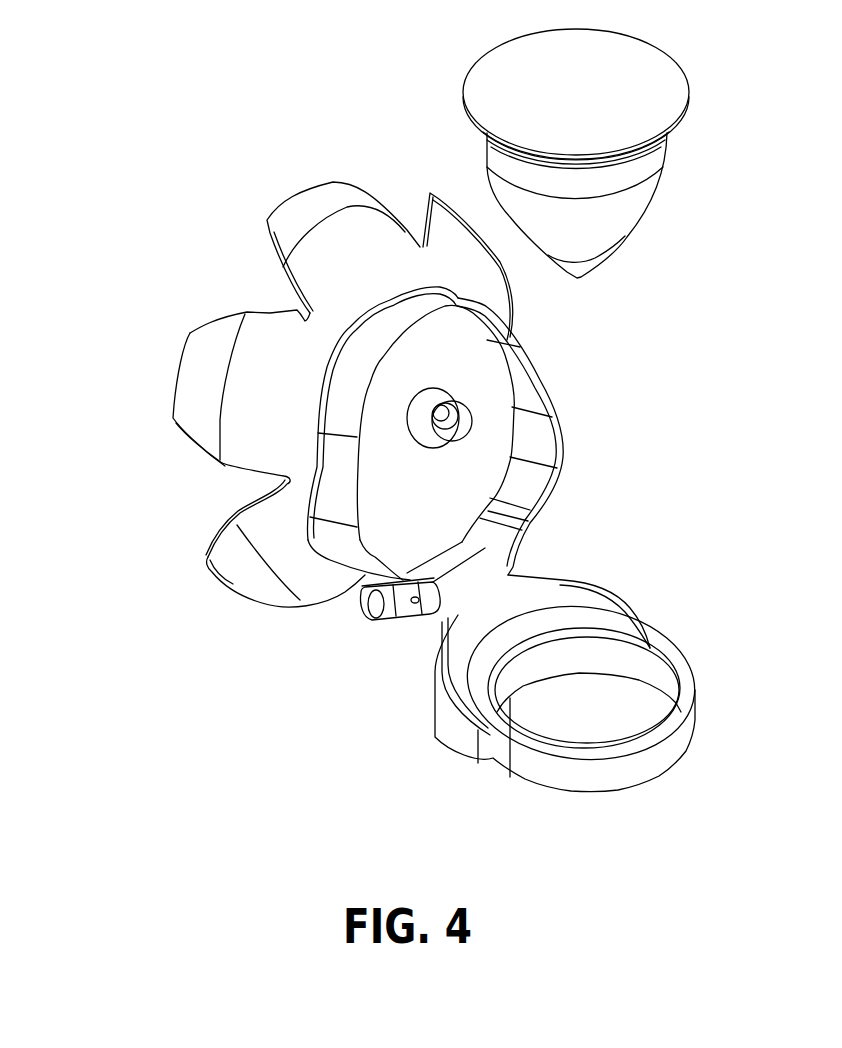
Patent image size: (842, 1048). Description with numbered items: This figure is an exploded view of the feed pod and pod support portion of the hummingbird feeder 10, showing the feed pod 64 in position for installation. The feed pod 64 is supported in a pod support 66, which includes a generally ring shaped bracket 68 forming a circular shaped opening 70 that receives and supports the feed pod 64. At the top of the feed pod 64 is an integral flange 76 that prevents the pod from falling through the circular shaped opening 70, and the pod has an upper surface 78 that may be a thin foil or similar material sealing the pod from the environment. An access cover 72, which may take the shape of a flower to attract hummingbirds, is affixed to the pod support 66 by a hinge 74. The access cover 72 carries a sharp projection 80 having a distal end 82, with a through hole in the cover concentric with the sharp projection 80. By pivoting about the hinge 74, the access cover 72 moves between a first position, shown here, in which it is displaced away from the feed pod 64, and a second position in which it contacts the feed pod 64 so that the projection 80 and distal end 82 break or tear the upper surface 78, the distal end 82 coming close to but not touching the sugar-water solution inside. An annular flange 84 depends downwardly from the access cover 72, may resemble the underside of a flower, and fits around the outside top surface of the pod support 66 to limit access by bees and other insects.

The hummingbird feeder 10 is at (103, 266).
The feed pod 64 is at (645, 200).
The pod support 66 is at (563, 597).
The ring shaped bracket 68 is at (677, 738).
The circular shaped opening 70 is at (637, 717).
The access cover 72 is at (323, 207).
The hinge 74 is at (412, 630).
The integral flange 76 is at (687, 112).
The upper surface 78 is at (657, 83).
The sharp projection 80 is at (455, 400).
The distal end 82 is at (460, 450).
The annular flange 84 is at (550, 394).